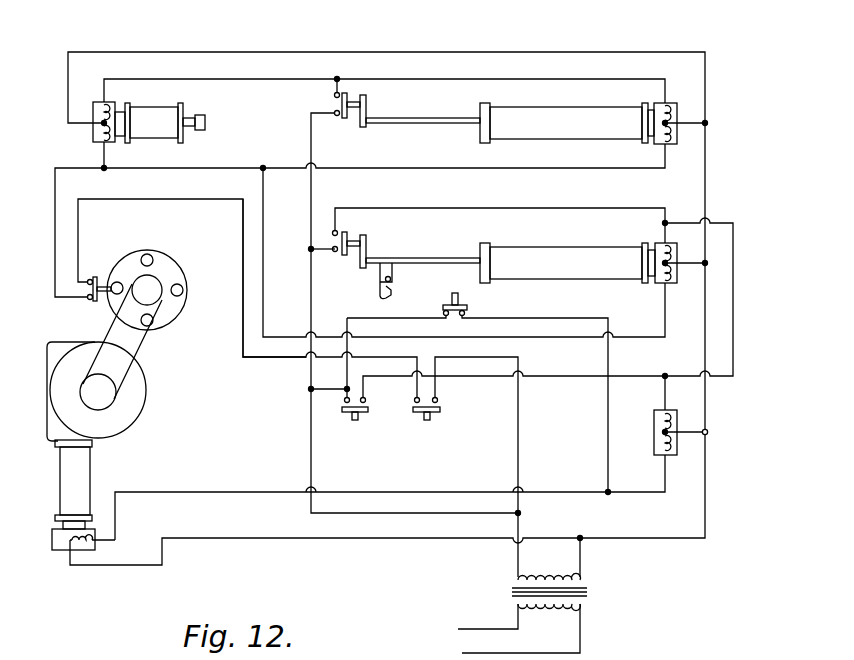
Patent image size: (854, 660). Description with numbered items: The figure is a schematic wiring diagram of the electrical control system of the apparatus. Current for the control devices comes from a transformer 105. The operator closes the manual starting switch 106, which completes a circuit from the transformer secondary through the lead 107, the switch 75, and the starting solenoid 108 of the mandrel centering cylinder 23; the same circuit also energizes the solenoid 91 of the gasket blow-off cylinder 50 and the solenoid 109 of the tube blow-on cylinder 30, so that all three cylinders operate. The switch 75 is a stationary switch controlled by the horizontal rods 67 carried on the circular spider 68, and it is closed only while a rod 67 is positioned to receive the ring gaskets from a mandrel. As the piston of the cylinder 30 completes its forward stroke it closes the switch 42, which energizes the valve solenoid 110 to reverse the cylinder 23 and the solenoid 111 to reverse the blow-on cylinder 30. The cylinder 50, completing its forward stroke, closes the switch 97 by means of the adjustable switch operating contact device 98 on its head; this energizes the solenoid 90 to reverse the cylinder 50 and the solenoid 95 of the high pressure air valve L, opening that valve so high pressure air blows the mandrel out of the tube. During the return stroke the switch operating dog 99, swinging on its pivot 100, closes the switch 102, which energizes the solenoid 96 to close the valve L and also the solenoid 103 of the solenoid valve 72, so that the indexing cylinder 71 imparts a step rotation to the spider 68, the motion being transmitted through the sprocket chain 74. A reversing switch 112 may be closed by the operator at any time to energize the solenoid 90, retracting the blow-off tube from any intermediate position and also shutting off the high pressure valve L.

The mandrel centering cylinder 23 is at (155, 116).
The tube blow-on cylinder 30 is at (595, 95).
The switch 42 is at (351, 97).
The gasket blow-off cylinder 50 is at (580, 237).
The horizontal rods 67 is at (119, 282).
The circular spider 68 is at (174, 272).
The indexing cylinder 71 is at (65, 463).
The solenoid valve 72 is at (58, 545).
The sprocket chain 74 is at (139, 348).
The switch 75 is at (94, 300).
The solenoid 90 is at (673, 252).
The solenoid 91 is at (673, 272).
The solenoid 95 is at (658, 425).
The solenoid 96 is at (658, 439).
The switch 97 is at (345, 233).
The switch operating contact device 98 is at (366, 244).
The switch operating dog 99 is at (394, 291).
The pivot 100 is at (392, 279).
The switch 102 is at (468, 306).
The solenoid 103 is at (92, 549).
The transformer 105 is at (517, 598).
The manual starting switch 106 is at (441, 409).
The lead 107 is at (258, 358).
The starting solenoid 108 is at (99, 134).
The solenoid 109 is at (668, 137).
The valve solenoid 110 is at (100, 112).
The solenoid 111 is at (668, 111).
The reversing switch 112 is at (364, 408).
The high pressure air valve L is at (677, 412).